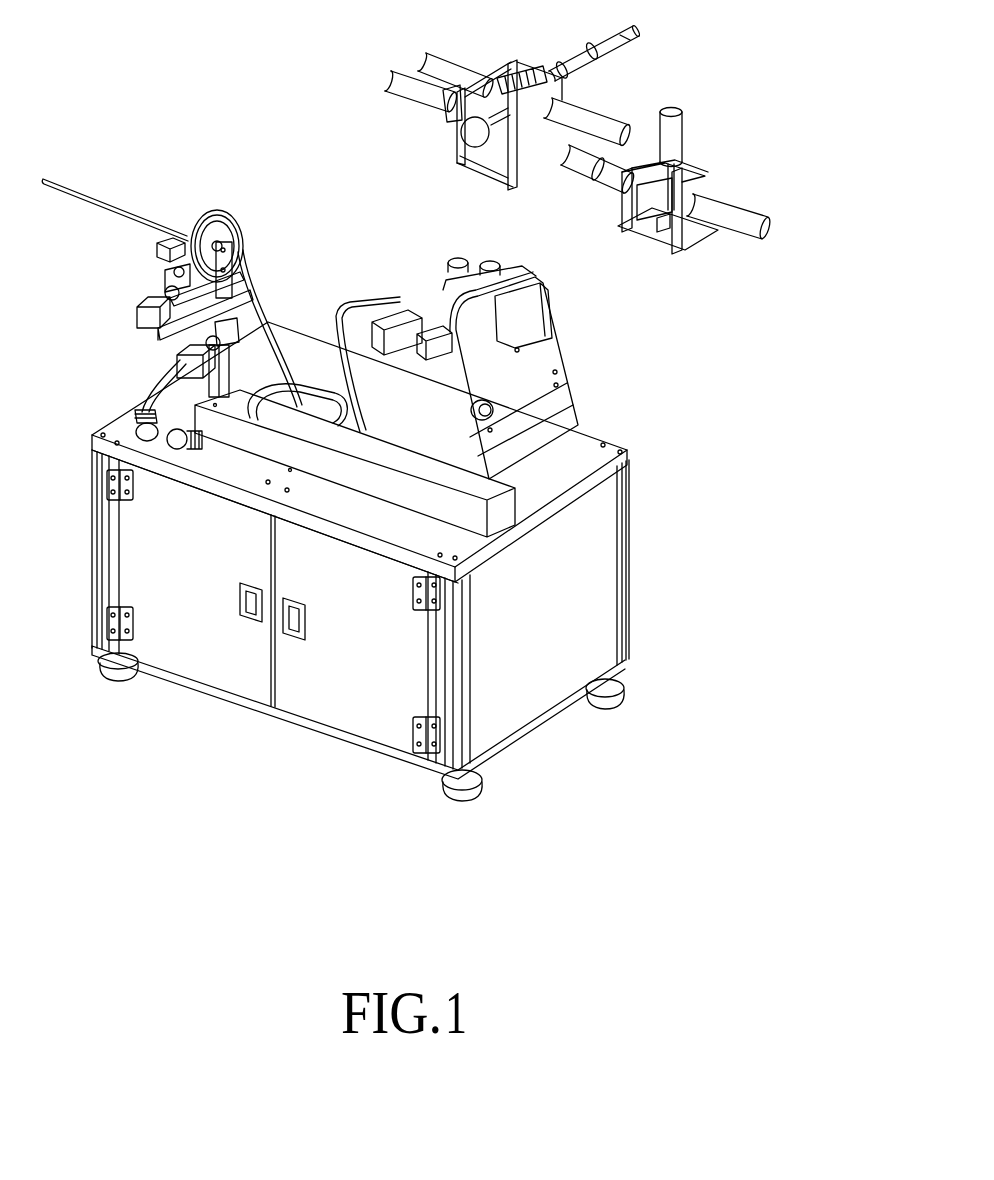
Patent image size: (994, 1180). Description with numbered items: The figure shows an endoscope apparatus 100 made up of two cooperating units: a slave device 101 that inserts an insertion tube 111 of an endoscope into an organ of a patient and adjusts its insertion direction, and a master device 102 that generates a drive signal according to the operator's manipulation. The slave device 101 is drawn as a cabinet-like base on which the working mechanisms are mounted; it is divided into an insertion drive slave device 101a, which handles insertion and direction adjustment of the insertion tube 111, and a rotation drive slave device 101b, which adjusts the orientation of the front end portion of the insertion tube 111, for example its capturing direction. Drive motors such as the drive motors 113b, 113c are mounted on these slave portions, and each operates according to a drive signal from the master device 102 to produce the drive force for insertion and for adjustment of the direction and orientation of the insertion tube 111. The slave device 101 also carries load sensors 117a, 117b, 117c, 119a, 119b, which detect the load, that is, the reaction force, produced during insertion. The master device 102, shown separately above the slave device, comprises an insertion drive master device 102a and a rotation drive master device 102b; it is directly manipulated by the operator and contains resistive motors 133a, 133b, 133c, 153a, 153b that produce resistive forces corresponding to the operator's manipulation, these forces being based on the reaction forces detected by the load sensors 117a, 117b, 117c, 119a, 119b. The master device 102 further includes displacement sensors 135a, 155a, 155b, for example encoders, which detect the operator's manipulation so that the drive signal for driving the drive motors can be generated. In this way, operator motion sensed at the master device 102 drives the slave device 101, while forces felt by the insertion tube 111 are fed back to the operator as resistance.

The endoscope apparatus 100 is at (272, 112).
The slave device 101 is at (650, 534).
The insertion drive slave device 101a is at (124, 340).
The rotation drive slave device 101b is at (578, 367).
The master device 102 is at (802, 137).
The insertion drive master device 102a is at (655, 30).
The rotation drive master device 102b is at (700, 152).
The insertion tube 111 is at (88, 192).
The drive motor 113b is at (135, 313).
The drive motor 113c is at (177, 362).
The load sensor 117a is at (155, 241).
The load sensor 117b is at (165, 269).
The load sensor 117c is at (278, 332).
The load sensor 119a is at (447, 258).
The load sensor 119b is at (390, 322).
The resistive motor 133a is at (600, 112).
The resistive motor 133b is at (443, 58).
The resistive motor 133c is at (385, 76).
The displacement sensor 135a is at (533, 184).
The resistive motor 153a is at (745, 213).
The resistive motor 153b is at (578, 193).
The displacement sensor 155a is at (688, 222).
The displacement sensor 155b is at (592, 172).